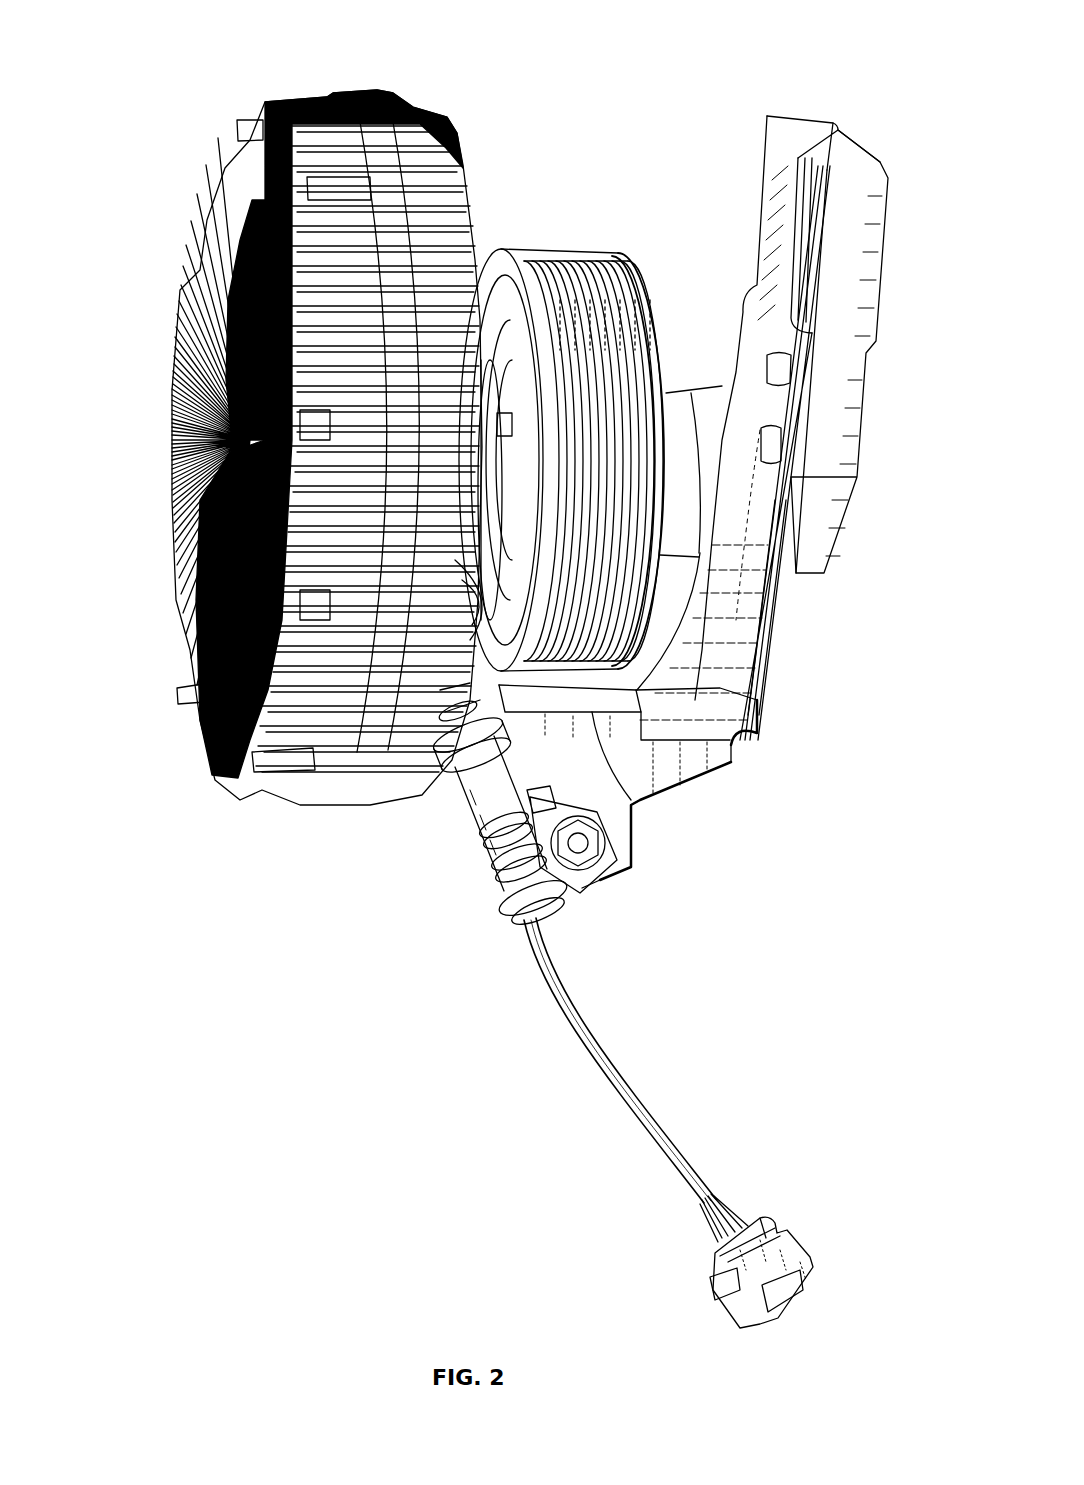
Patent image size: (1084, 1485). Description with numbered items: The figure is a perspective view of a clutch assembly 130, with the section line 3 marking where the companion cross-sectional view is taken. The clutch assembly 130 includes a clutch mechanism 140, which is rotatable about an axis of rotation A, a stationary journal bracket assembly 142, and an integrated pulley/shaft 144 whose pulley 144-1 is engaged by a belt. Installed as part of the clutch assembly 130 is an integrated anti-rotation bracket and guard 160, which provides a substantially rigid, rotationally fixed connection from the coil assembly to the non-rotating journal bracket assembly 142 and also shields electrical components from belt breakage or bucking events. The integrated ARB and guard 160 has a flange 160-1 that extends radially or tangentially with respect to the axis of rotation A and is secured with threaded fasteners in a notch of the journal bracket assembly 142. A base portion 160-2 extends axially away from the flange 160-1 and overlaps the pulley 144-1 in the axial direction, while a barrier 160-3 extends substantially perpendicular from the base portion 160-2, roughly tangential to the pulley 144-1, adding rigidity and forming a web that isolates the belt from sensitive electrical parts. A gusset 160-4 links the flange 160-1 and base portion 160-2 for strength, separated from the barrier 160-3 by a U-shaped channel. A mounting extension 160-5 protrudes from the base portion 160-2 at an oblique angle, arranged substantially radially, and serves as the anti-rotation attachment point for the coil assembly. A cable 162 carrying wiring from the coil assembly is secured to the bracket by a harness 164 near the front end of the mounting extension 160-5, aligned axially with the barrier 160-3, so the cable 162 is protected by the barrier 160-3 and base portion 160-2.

The clutch assembly 130 is at (195, 58).
The clutch mechanism 140 is at (213, 214).
The journal bracket assembly 142 is at (763, 150).
The integrated pulley/shaft 144 is at (600, 262).
The pulley 144-1 is at (547, 256).
The integrated anti-rotation bracket and guard 160 is at (741, 759).
The flange 160-1 is at (778, 636).
The base portion 160-2 is at (682, 790).
The barrier 160-3 is at (632, 788).
The gusset 160-4 is at (768, 720).
The mounting extension 160-5 is at (575, 790).
The cable 162 is at (487, 860).
The harness 164 is at (587, 918).
The section line 3- 3 is at (375, 15).
The axis of rotation A is at (250, 437).